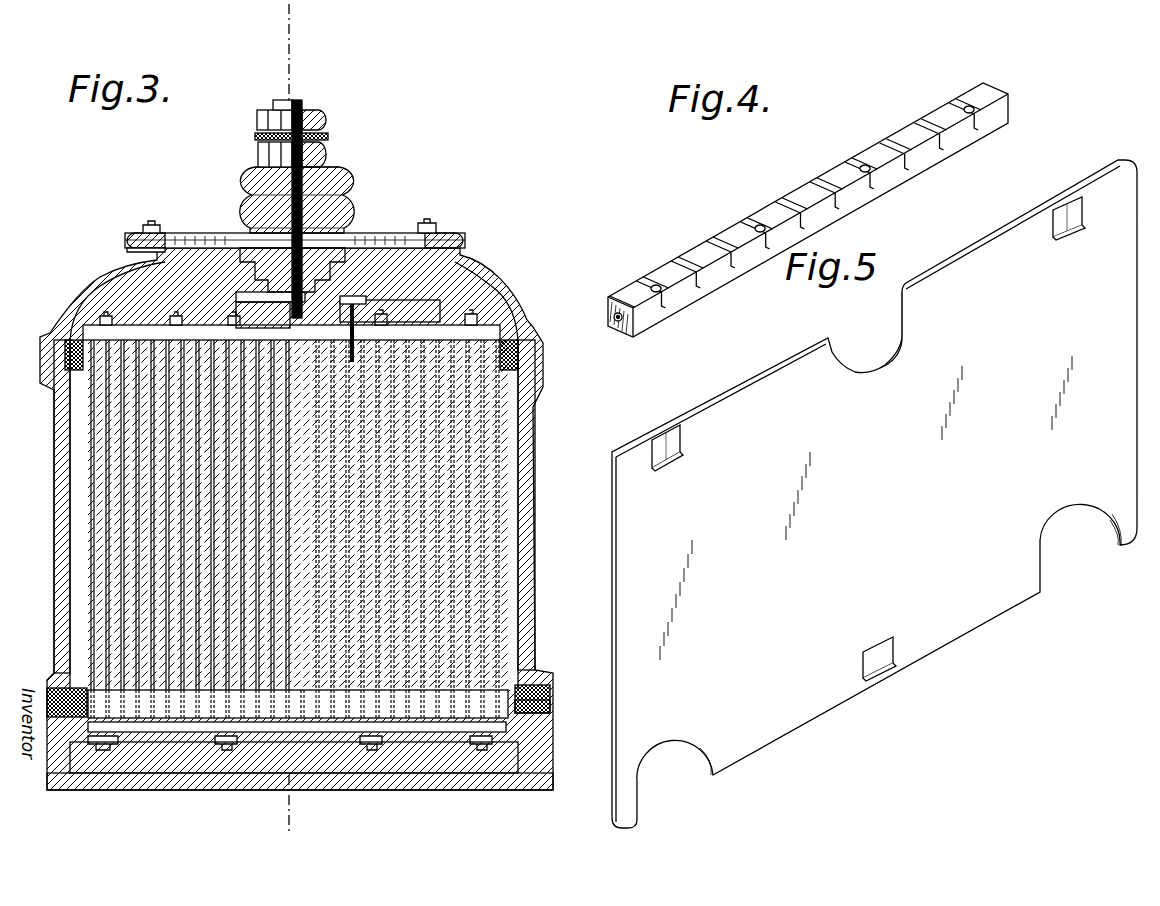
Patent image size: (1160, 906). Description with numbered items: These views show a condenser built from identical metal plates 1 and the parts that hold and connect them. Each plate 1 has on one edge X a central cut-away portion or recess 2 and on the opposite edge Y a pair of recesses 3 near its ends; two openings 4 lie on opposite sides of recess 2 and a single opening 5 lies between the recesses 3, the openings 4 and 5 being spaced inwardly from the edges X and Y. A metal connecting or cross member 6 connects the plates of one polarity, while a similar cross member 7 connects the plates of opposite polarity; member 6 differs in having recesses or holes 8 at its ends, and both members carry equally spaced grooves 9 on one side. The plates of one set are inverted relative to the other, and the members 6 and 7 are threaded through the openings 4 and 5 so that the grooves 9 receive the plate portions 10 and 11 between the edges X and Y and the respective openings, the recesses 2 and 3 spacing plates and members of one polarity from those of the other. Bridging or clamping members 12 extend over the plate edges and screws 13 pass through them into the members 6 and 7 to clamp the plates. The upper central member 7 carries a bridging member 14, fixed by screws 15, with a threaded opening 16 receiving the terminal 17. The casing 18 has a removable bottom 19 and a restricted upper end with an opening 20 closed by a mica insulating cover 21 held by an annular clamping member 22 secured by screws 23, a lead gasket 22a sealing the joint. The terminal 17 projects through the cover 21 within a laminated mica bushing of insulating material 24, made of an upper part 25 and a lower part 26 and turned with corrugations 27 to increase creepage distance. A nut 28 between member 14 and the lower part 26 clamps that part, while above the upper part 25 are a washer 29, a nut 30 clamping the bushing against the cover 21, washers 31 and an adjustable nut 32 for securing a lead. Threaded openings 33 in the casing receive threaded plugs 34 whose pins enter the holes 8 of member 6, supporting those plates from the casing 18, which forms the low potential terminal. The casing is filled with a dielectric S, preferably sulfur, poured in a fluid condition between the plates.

In FIG. 3, the metal plate 1 is at (507, 487).
In FIG. 5, the metal plate 1 is at (1123, 300).
In FIG. 5, the cut-away portion or recess 2 is at (880, 313).
In FIG. 5, the recesses 3 is at (1083, 533).
In FIG. 5, the openings 4 is at (1082, 212).
In FIG. 5, the opening 5 is at (893, 645).
In FIG. 3, the connecting or cross member 6 is at (80, 347).
In FIG. 4, the connecting or cross member 6 is at (804, 223).
In FIG. 3, the cross member 7 is at (507, 343).
In FIG. 4, the recesses or holes 8 is at (618, 321).
In FIG. 4, the grooves 9 is at (707, 240).
In FIG. 5, the portion of plate 10 is at (1060, 205).
In FIG. 5, the portion of plate 11 is at (885, 670).
In FIG. 3, the bridging or clamping member 12 is at (98, 288).
In FIG. 3, the screws 13 is at (100, 318).
In FIG. 3, the bridging member 14 is at (440, 308).
In FIG. 3, the screws 15 is at (460, 242).
In FIG. 3, the threaded opening 16 is at (345, 300).
In FIG. 3, the binding post or terminal 17 is at (330, 167).
In FIG. 3, the casing 18 is at (533, 410).
In FIG. 3, the removable bottom 19 is at (500, 780).
In FIG. 3, the opening 20 is at (177, 237).
In FIG. 3, the insulating cover 21 is at (190, 237).
In FIG. 3, the annular clamping member 22 is at (130, 240).
In FIG. 3, the gasket 22a is at (127, 247).
In FIG. 3, the screws 23 is at (152, 227).
In FIG. 3, the bushing of insulating material 24 is at (333, 170).
In FIG. 3, the upper bushing part 25 is at (338, 220).
In FIG. 3, the lower bushing part 26 is at (313, 290).
In FIG. 3, the corrugations 27 is at (243, 200).
In FIG. 3, the nut 28 is at (110, 263).
In FIG. 3, the washer 29 is at (248, 163).
In FIG. 3, the nut 30 is at (322, 155).
In FIG. 3, the washers 31 is at (322, 135).
In FIG. 3, the nut 32 is at (305, 108).
In FIG. 3, the threaded openings 33 is at (550, 688).
In FIG. 3, the threaded plugs 34 is at (550, 707).
In FIG. 3, the dielectric S is at (77, 510).
In FIG. 5, the plate edge X is at (763, 360).
In FIG. 5, the plate edge Y is at (843, 703).